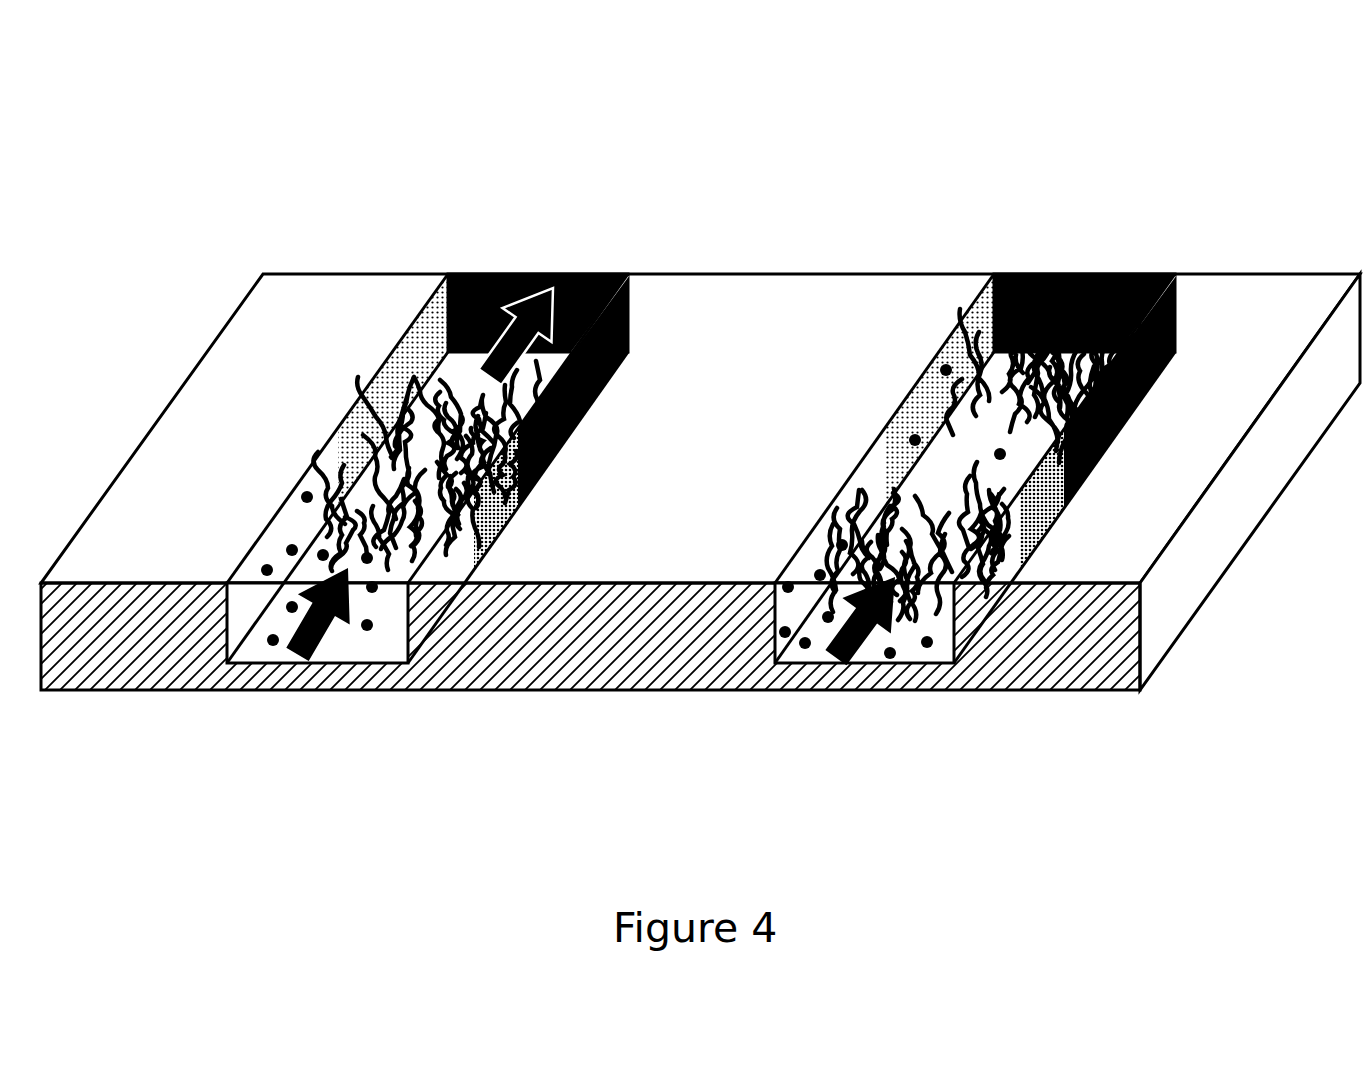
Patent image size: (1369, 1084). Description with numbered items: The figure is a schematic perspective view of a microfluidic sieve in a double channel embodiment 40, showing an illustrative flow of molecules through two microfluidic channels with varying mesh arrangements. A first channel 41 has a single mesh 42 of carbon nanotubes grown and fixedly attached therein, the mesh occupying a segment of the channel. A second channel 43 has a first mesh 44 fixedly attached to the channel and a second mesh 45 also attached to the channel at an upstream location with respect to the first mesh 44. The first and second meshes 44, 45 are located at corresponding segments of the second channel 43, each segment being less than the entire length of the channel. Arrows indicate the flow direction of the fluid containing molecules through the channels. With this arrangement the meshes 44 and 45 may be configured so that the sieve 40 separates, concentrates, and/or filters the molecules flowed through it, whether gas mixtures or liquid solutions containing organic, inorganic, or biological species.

The double channel embodiment 40 is at (800, 125).
The first channel 41 is at (473, 308).
The single mesh 42 is at (328, 427).
The second channel 43 is at (1037, 307).
The first mesh 44 is at (934, 349).
The second mesh 45 is at (830, 485).